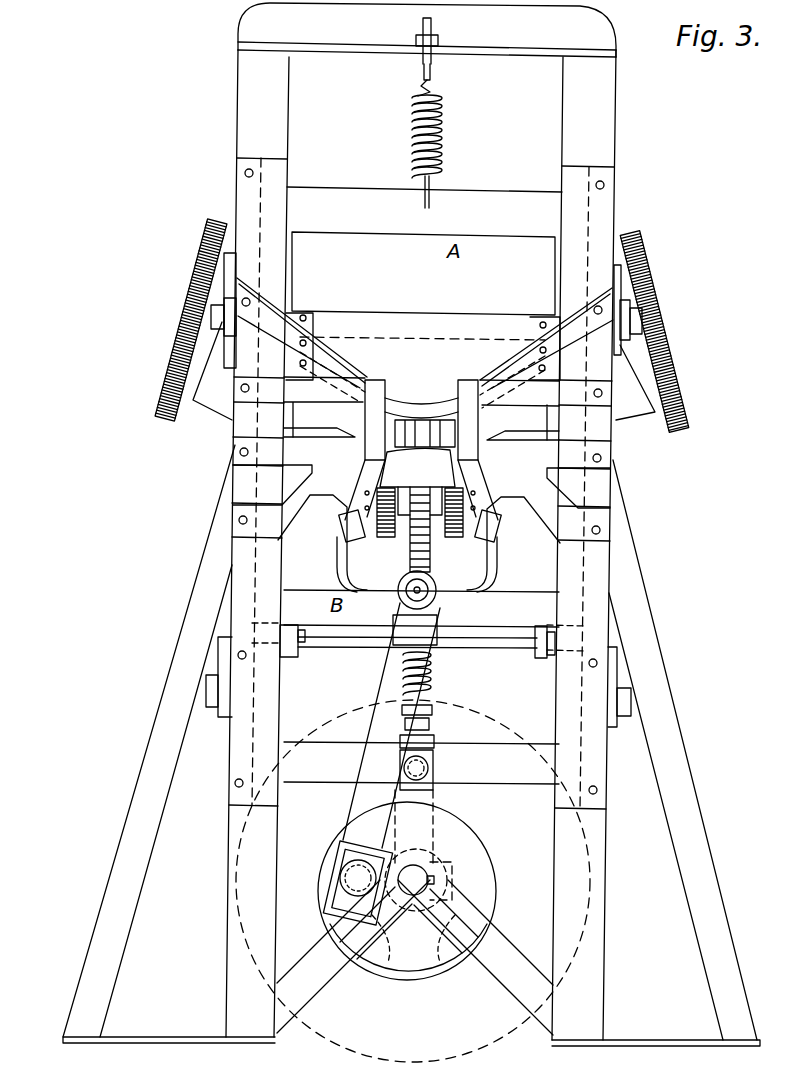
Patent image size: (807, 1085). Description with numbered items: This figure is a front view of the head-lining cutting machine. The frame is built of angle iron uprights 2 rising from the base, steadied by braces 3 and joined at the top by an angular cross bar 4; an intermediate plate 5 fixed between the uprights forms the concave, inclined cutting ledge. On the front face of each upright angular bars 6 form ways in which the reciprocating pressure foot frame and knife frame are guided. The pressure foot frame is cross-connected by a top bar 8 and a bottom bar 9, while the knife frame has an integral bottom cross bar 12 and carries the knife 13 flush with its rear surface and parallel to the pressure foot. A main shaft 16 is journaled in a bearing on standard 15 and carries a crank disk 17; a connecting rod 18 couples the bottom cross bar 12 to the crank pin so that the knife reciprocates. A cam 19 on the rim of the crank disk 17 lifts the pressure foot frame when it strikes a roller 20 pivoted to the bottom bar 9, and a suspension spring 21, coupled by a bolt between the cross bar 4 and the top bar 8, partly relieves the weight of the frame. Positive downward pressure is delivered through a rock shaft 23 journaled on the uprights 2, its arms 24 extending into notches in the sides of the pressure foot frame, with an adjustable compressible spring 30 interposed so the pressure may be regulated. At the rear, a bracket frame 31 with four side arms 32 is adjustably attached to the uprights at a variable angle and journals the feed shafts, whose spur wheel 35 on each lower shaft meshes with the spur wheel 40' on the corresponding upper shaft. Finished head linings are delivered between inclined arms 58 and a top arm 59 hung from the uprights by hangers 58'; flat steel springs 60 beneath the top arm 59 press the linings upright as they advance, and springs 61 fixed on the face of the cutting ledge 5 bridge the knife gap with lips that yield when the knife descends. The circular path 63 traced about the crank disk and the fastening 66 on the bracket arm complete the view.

The angle iron uprights 2 is at (246, 100).
The braces 3 is at (140, 770).
The angular cross bar 4 is at (456, 45).
The intermediate plate 5 is at (321, 431).
The angular bars 6 is at (437, 242).
The top bar 8 is at (423, 257).
The bottom bar 9 is at (316, 780).
The bottom cross bar 12 is at (421, 608).
The knife 13 is at (415, 352).
The standard 15 is at (496, 984).
The main shaft 16 is at (425, 886).
The crank disk 17 is at (490, 850).
The connecting rod 18 is at (382, 720).
The cam 19 is at (400, 980).
The roller 20 is at (430, 792).
The suspension spring 21 is at (412, 112).
The rock shaft 23 is at (500, 656).
The arms 24 is at (543, 660).
The adjustable compressible spring 30 is at (435, 674).
The bracket frame 31 is at (205, 405).
The side arms 32 is at (640, 318).
The spur wheel 35 is at (180, 370).
The spur wheel 40' is at (429, 326).
The inclined arms 58 is at (418, 506).
The hangers 58' is at (421, 440).
The top arm 59 is at (384, 398).
The flat steel springs 60 is at (545, 473).
The springs 61 is at (417, 510).
The path circle 63 is at (390, 1062).
The bolt 66 is at (631, 702).